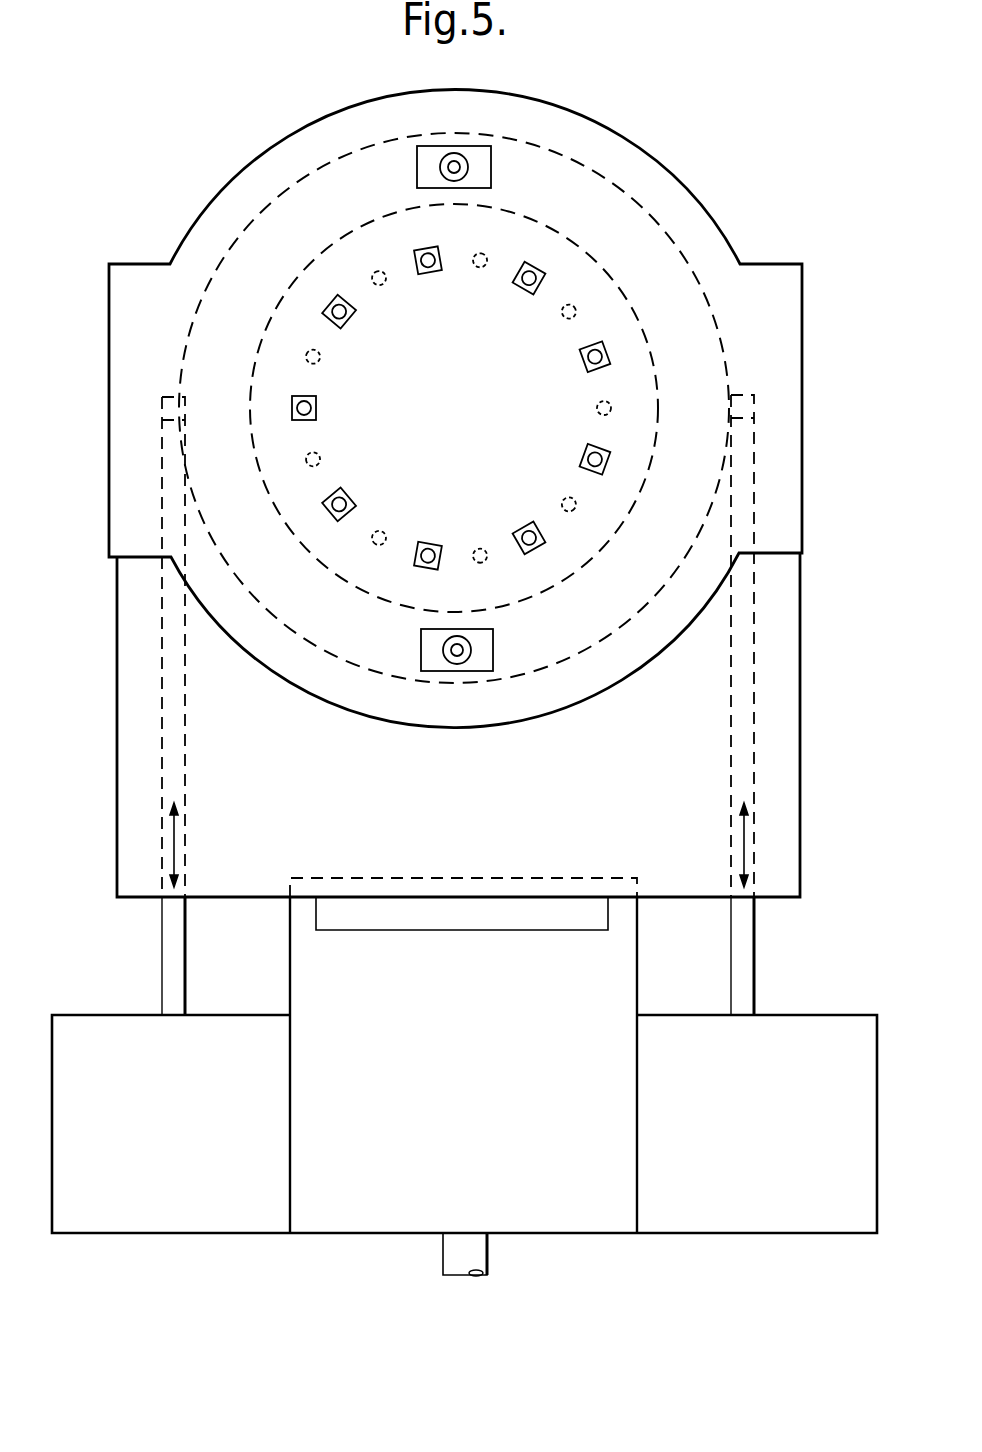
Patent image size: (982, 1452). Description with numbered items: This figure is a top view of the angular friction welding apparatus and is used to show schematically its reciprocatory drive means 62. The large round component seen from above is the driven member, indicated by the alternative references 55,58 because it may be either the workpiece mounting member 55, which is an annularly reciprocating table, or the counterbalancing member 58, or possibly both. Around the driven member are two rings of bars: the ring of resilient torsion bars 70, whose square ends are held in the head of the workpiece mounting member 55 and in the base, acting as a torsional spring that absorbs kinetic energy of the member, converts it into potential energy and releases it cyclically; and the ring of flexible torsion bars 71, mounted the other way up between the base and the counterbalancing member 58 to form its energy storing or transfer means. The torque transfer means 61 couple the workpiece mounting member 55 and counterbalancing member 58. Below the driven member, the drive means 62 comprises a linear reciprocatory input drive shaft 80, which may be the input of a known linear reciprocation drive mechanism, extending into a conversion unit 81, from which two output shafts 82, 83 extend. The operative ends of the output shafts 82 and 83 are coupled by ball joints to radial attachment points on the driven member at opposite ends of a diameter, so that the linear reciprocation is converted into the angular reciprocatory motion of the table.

The workpiece mounting member 55 is at (348, 695).
The counterbalancing member 58 is at (647, 268).
The torque transfer means 61 is at (478, 152).
The torsion bars 70 is at (416, 256).
The torsion bars 71 is at (474, 268).
The input drive shaft 80 is at (478, 1255).
The conversion unit 81 is at (470, 1081).
The output shaft 82 is at (175, 945).
The output shaft 83 is at (740, 953).
The drive means 62 is at (374, 1182).